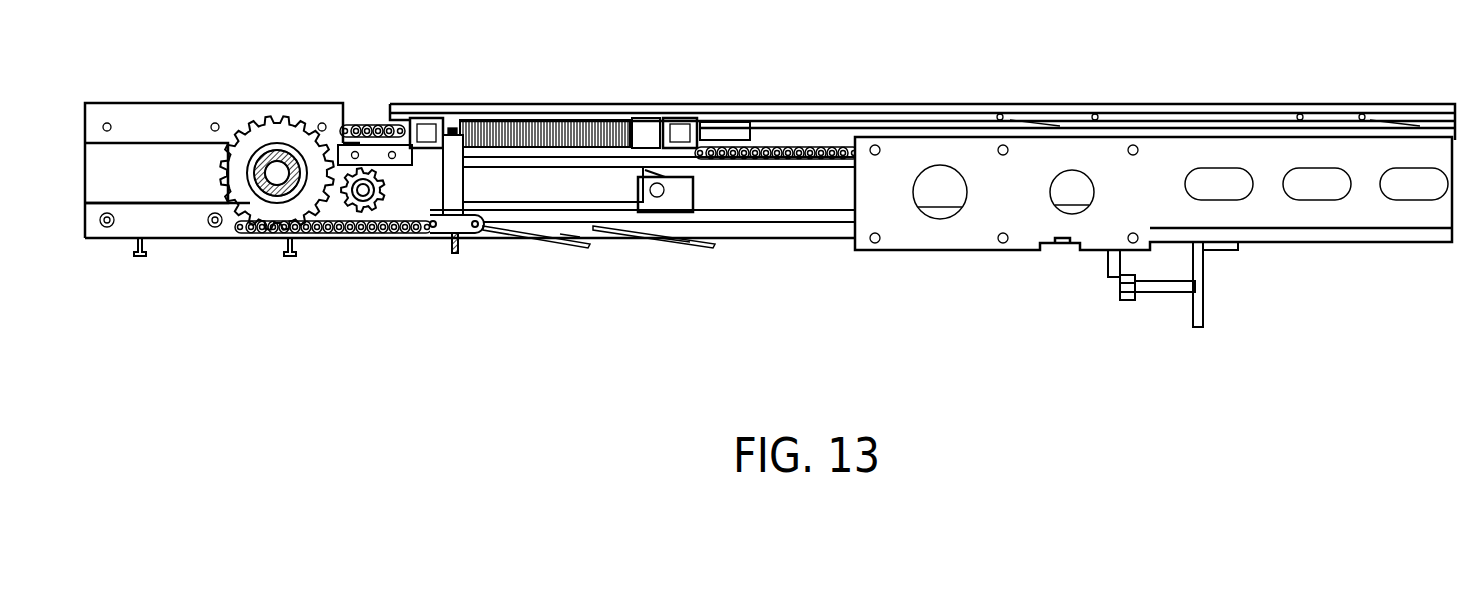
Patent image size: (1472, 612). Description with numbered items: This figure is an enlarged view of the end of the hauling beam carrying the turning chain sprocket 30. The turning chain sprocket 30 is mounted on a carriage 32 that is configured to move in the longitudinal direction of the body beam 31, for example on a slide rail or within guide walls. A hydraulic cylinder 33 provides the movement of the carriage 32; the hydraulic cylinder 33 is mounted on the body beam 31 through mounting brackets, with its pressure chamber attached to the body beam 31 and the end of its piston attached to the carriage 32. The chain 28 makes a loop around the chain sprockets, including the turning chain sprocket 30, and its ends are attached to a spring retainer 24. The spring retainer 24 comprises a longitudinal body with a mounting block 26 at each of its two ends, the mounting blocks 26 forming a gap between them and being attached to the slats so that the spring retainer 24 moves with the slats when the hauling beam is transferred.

The spring retainer 24 is at (618, 131).
The mounting block 26 is at (431, 131).
The chain 28 is at (838, 137).
The turning chain sprocket 30 is at (247, 216).
The body beam 31 is at (727, 223).
The carriage 32 is at (336, 190).
The hydraulic cylinder 33 is at (555, 193).